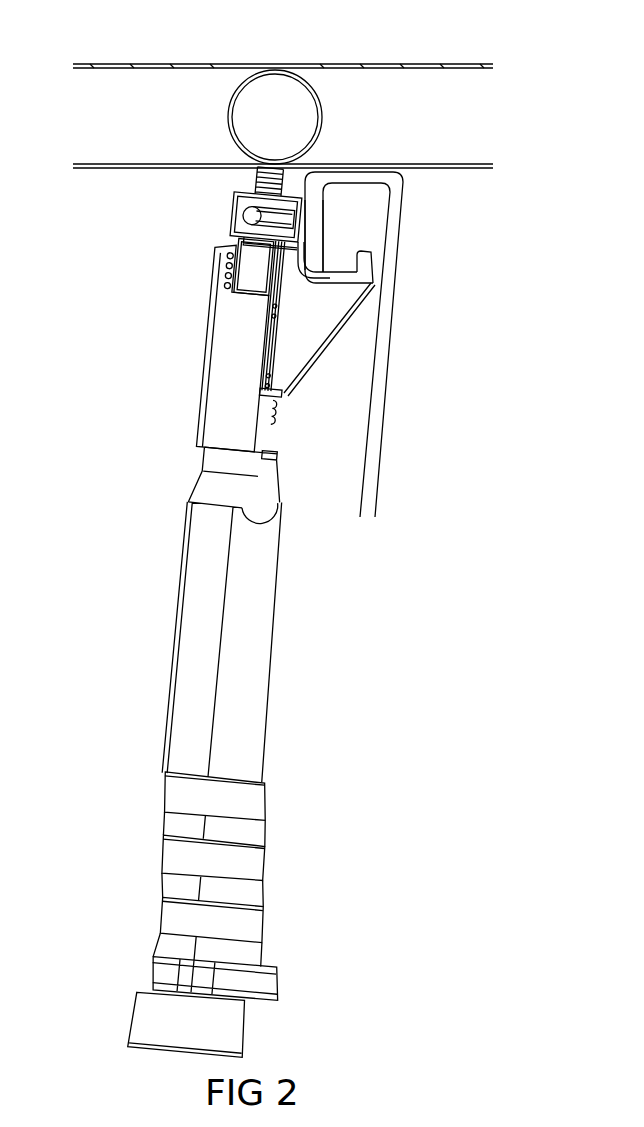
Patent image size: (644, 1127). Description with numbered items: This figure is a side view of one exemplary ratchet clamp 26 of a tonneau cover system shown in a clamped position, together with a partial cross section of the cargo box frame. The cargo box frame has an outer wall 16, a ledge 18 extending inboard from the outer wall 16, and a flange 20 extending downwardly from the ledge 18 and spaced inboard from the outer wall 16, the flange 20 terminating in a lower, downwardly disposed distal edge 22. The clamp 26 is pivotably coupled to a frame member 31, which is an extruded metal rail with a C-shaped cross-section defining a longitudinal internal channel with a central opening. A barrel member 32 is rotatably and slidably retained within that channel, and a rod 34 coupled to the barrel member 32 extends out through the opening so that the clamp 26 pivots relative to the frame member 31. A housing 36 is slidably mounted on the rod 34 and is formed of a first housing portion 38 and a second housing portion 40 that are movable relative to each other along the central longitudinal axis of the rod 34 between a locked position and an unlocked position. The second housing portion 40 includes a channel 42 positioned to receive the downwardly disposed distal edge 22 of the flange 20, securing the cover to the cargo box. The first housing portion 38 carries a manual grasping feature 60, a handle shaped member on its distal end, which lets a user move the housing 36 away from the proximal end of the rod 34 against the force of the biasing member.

The outer wall 16 is at (380, 409).
The ledge 18 is at (375, 324).
The flange 20 is at (316, 228).
The distal edge 22 is at (307, 284).
The ratchet clamp 26 is at (170, 647).
The frame member 31 is at (190, 64).
The barrel member 32 is at (322, 118).
The rod 34 is at (247, 178).
The housing 36 is at (287, 415).
The first housing portion 38 is at (242, 372).
The second housing portion 40 is at (303, 346).
The channel 42 is at (331, 256).
The manual grasping feature 60 is at (192, 743).